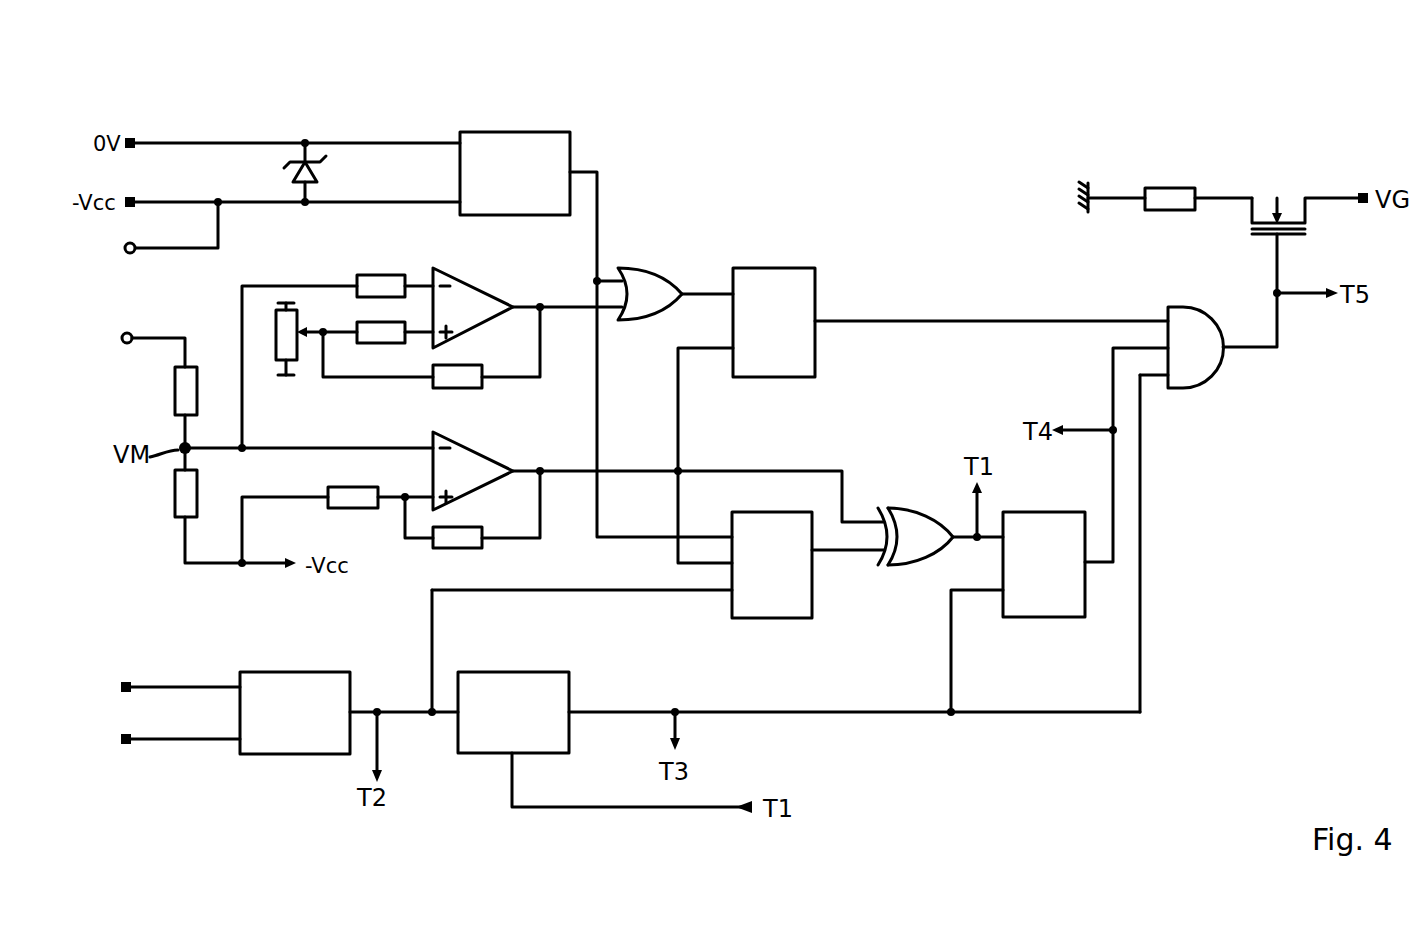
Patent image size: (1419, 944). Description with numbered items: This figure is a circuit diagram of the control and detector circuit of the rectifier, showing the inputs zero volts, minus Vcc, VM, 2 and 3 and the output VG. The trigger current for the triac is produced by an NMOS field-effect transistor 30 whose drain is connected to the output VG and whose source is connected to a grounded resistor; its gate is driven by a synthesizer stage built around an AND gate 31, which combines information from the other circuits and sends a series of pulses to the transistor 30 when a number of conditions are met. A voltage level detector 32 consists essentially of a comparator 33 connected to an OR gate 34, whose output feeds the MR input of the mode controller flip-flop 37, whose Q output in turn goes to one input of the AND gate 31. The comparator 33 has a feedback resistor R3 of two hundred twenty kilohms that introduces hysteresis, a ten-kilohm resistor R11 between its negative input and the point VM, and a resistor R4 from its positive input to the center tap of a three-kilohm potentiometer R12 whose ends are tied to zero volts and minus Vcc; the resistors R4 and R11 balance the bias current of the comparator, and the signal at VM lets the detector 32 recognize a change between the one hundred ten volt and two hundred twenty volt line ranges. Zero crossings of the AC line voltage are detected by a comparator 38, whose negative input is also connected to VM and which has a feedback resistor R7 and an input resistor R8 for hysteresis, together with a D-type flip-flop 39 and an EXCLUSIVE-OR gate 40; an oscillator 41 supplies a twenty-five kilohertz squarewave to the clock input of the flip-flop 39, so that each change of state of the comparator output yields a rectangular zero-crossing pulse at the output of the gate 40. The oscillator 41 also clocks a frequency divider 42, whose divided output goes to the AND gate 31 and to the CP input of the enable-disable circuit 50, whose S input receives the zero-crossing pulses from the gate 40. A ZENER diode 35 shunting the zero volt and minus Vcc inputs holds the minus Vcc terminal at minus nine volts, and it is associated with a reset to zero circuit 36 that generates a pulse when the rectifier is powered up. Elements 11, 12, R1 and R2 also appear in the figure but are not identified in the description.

The input 2 is at (127, 681).
The input 3 is at (125, 746).
The input terminal 11 is at (121, 338).
The input terminal 12 is at (131, 255).
The NMOS field-effect transistor 30 is at (1268, 197).
The AND gate 31 is at (1197, 307).
The detector 32 is at (389, 341).
The comparator 33 is at (497, 293).
The OR gate 34 is at (662, 270).
The ZENER diode 35 is at (318, 170).
The reset to zero circuit 36 is at (517, 131).
The flip-flop 37 is at (817, 343).
The comparator 38 is at (488, 452).
The D-type flip-flop 39 is at (772, 618).
The EXCLUSIVE-OR gate 40 is at (915, 508).
The oscillator 41 is at (352, 686).
The frequency divider 42 is at (525, 672).
The enable-disable circuit 50 is at (1052, 617).
The resistor R1 is at (174, 393).
The resistor R2 is at (174, 494).
The feedback resistor R3 is at (484, 385).
The resistor R4 is at (372, 344).
The feedback resistor R7 is at (466, 527).
The negative input resistor R8 is at (336, 487).
The resistor R11 is at (395, 259).
The potentiometer R12 is at (274, 338).